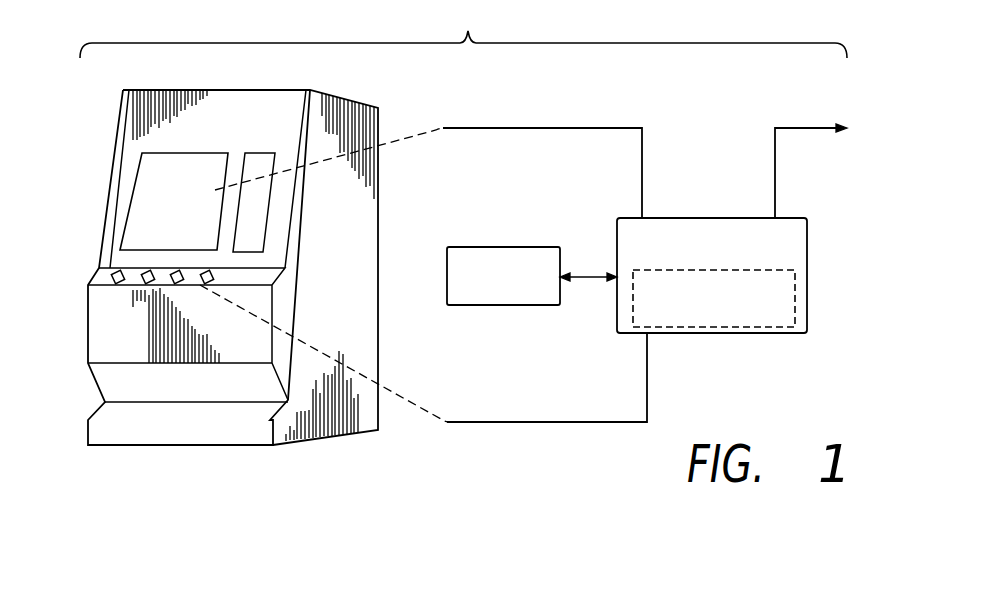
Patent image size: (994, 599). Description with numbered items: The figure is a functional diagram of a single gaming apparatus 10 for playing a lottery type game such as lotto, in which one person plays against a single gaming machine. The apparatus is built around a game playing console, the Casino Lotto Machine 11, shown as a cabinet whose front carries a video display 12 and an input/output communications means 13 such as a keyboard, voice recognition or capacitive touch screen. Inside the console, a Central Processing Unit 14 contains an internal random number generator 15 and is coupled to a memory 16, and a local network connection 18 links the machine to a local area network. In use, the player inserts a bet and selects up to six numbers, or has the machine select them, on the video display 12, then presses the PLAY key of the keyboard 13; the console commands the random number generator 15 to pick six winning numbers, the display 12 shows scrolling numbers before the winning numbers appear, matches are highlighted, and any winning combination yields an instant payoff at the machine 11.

The gaming apparatus 10 is at (463, 31).
The Casino Lotto Machine 11 is at (347, 237).
The video display 12 is at (142, 167).
The input/output communications means 13 is at (122, 273).
The Central Processing Unit 14 is at (807, 240).
The random number generator 15 is at (767, 315).
The memory 16 is at (470, 246).
The local network connection 18 is at (812, 128).